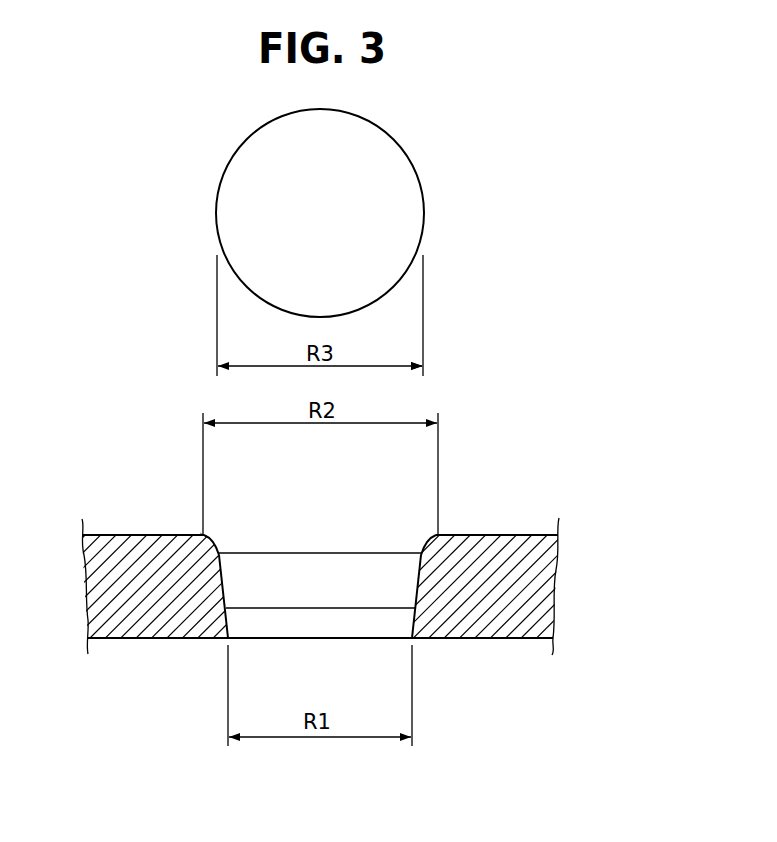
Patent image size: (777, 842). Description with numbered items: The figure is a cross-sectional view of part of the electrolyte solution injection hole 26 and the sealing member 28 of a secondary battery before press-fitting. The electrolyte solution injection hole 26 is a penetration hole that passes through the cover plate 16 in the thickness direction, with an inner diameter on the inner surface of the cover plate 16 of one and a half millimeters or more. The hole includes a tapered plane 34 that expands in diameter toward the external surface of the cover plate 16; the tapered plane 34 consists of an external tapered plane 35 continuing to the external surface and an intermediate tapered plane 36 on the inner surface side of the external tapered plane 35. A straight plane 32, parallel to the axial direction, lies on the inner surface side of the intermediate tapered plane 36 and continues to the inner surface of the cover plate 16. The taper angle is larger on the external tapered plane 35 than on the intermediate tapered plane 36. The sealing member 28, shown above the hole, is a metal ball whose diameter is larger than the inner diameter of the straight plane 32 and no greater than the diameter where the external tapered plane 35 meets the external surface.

The cover plate 16 is at (493, 557).
The electrolyte solution injection hole 26 is at (210, 492).
The sealing member 28 is at (402, 147).
The straight plane 32 is at (229, 622).
The tapered plane 34 is at (412, 560).
The external tapered plane 35 is at (215, 538).
The intermediate tapered plane 36 is at (227, 582).